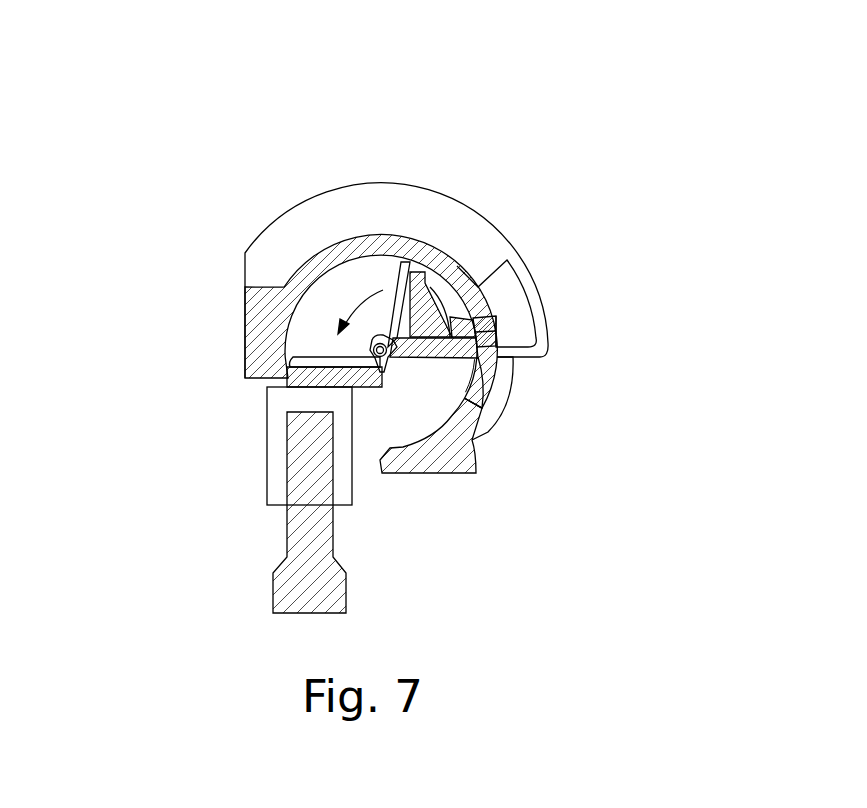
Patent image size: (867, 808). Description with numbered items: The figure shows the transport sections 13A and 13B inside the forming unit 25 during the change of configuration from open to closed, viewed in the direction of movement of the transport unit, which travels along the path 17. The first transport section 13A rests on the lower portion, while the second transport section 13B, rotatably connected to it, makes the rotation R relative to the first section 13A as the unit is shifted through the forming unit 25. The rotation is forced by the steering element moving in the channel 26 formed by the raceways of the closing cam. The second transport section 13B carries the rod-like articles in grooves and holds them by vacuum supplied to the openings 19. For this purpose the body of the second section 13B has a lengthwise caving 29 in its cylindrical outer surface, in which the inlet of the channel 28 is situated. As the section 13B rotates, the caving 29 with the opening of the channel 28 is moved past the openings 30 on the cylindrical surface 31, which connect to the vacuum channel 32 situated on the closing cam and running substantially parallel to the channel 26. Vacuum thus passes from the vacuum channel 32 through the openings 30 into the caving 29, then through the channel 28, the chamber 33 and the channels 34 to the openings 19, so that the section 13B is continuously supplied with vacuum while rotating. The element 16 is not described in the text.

The forming unit 25 is at (371, 221).
The cylindrical surface 31 is at (312, 275).
The openings 19 is at (442, 206).
The channels 34 is at (408, 283).
The chamber 33 is at (437, 303).
The second transport section 13B is at (565, 235).
The openings 30 is at (490, 317).
The vacuum channel 32 is at (523, 327).
The lengthwise caving 29 is at (502, 360).
The channel 26 is at (486, 392).
The channel 28 is at (452, 360).
The first transport section 13A is at (297, 380).
The mounting bracket 16 is at (282, 400).
The path 17 is at (297, 458).
The rotation R is at (347, 307).